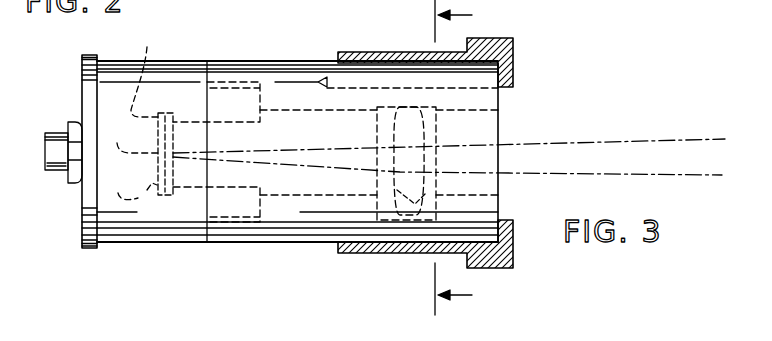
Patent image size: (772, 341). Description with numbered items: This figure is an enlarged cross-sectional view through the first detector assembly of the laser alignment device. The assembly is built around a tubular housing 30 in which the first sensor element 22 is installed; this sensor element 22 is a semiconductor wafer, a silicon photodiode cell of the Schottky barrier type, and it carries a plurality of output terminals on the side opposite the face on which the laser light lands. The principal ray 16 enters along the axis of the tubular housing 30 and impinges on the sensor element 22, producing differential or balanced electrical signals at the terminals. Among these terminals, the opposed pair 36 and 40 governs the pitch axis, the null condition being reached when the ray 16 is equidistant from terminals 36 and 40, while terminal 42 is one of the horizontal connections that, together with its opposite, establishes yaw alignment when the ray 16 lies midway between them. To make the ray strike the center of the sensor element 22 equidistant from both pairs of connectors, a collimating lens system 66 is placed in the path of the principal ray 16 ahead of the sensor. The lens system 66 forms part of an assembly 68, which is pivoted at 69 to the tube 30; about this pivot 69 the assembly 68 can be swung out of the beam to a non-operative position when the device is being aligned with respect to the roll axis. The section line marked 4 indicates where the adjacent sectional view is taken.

The principal ray 16 is at (650, 138).
The first sensor element 22 is at (167, 196).
The tubular housing 30 is at (247, 62).
The terminal 36 is at (146, 71).
The terminal 40 is at (132, 185).
The terminal 42 is at (132, 136).
The collimating lens system 66 is at (380, 222).
The assembly 68 is at (421, 222).
The pivot 69 is at (351, 72).
The section line 4- 4 is at (465, 157).